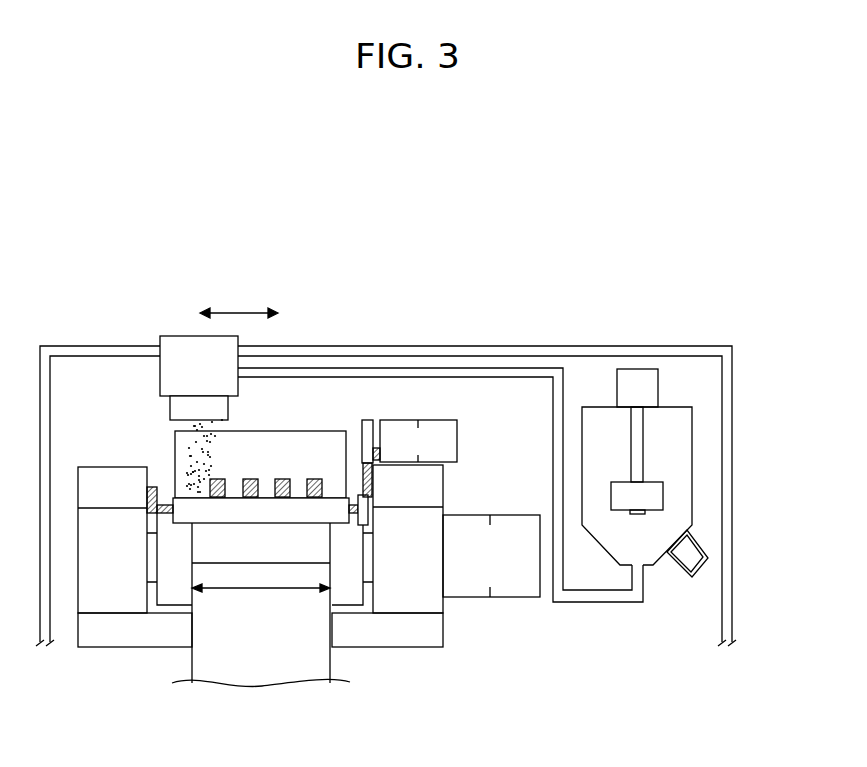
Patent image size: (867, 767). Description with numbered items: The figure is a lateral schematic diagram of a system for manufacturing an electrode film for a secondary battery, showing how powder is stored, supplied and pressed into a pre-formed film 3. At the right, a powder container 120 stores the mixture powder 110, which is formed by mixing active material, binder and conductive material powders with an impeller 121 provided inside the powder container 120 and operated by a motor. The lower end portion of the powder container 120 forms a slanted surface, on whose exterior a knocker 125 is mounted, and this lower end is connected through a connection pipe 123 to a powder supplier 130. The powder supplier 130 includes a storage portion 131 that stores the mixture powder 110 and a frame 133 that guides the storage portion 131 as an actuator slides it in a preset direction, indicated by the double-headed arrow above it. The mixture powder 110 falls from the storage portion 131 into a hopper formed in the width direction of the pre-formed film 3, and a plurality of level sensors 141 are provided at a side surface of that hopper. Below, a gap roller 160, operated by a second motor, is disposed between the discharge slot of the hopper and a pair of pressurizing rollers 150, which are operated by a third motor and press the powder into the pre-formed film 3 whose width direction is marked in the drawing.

The pre-formed film 3 is at (262, 664).
The mixture powder 110 is at (178, 447).
The powder container 120 is at (692, 500).
The impeller 121 is at (643, 445).
The connection pipe 123 is at (594, 603).
The knocker 125 is at (678, 566).
The powder supplier 130 is at (244, 333).
The storage portion 131 is at (181, 352).
The frame 133 is at (78, 346).
The level sensor 141 is at (313, 478).
The pair of pressurizing rollers 150 is at (171, 594).
The gap roller 160 is at (335, 512).